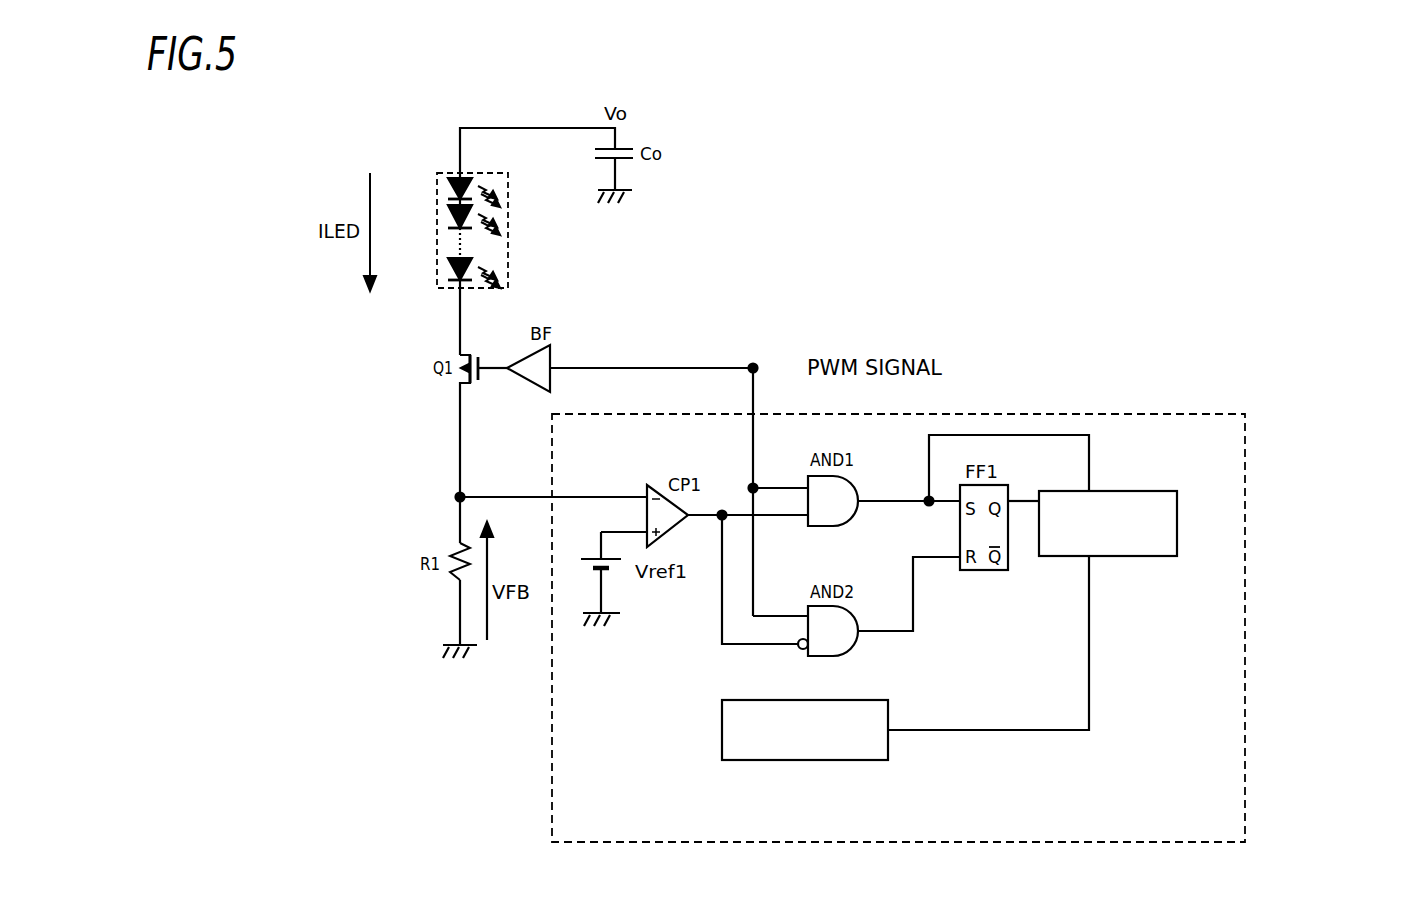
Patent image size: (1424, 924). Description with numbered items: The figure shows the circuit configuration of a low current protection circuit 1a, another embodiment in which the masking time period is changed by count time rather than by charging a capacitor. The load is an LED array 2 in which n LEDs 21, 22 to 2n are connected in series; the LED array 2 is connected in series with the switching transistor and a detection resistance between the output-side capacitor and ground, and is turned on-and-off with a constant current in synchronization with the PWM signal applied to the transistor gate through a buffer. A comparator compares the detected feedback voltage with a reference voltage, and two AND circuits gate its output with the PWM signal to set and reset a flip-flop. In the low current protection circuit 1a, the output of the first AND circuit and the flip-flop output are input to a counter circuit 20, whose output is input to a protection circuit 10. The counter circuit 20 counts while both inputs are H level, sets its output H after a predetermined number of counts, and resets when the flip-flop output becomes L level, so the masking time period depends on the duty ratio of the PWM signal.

The LED array 2 is at (508, 216).
The LED 21 is at (446, 190).
The LED 22 is at (446, 216).
The LED 2n is at (446, 272).
The counter circuit 20 is at (1198, 496).
The protection circuit 10 is at (827, 760).
The low current protection circuit 1a is at (915, 414).